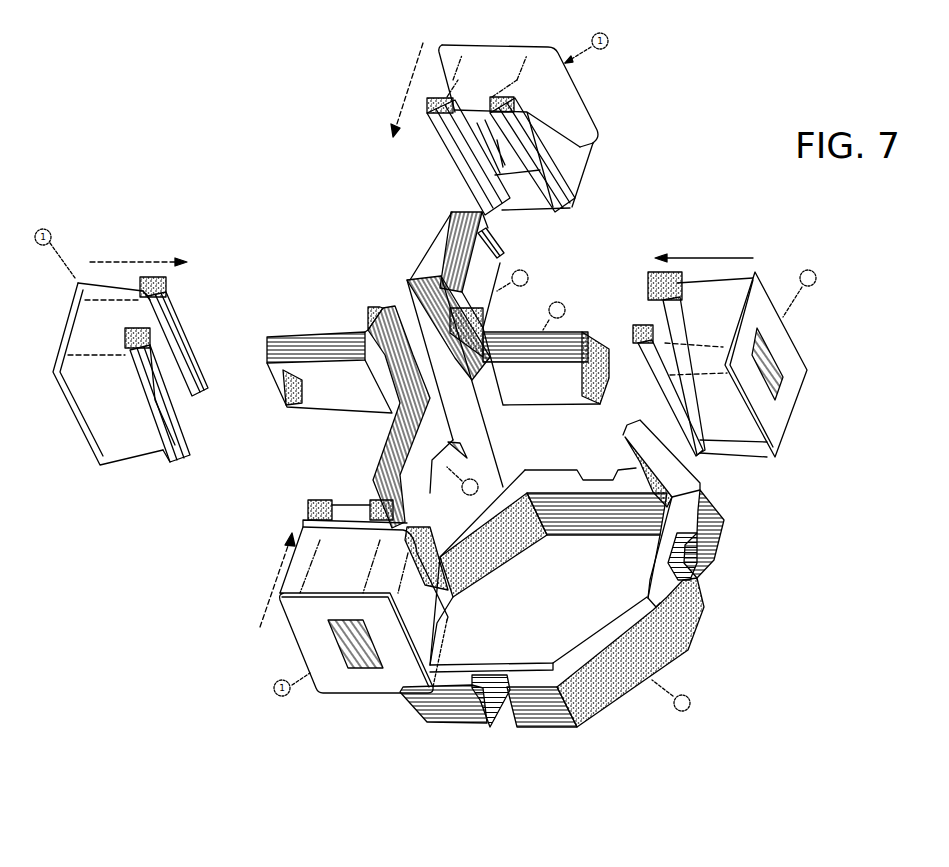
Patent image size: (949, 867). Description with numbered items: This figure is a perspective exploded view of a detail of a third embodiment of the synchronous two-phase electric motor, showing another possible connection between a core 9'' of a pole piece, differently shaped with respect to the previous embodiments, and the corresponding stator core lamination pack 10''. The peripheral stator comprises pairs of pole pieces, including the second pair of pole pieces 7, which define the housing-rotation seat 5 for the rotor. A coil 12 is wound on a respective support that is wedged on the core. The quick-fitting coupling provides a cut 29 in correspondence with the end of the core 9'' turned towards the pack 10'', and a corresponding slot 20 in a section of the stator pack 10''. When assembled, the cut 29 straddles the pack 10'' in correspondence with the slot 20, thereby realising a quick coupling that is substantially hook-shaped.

The housing-rotation seat 5 is at (587, 598).
The second pair of pole pieces 7 is at (418, 376).
The core 9'' is at (540, 297).
The cut 29 is at (588, 333).
The coil 12 is at (720, 327).
The slot 20 is at (718, 562).
The core lamination pack 10'' is at (558, 719).